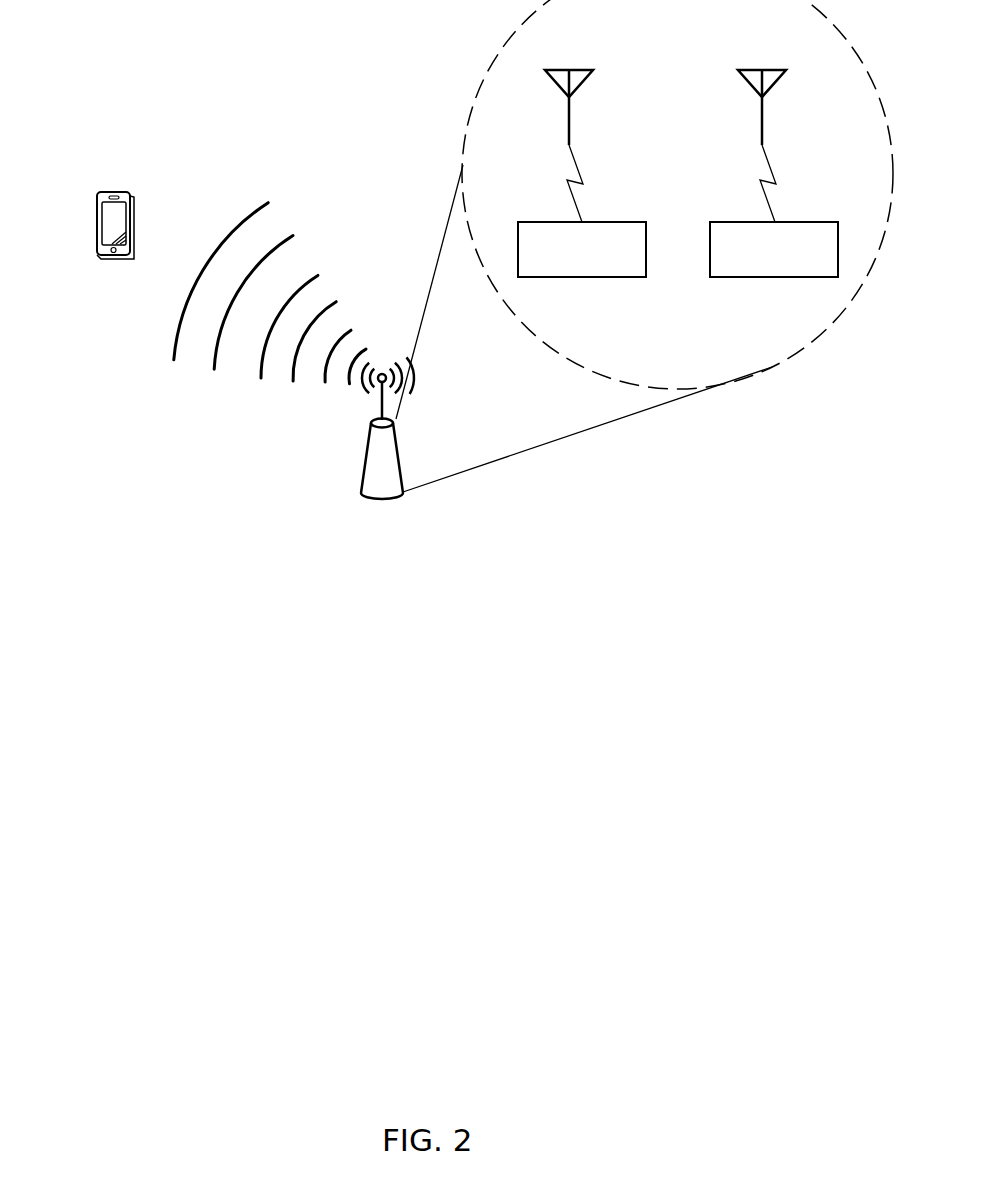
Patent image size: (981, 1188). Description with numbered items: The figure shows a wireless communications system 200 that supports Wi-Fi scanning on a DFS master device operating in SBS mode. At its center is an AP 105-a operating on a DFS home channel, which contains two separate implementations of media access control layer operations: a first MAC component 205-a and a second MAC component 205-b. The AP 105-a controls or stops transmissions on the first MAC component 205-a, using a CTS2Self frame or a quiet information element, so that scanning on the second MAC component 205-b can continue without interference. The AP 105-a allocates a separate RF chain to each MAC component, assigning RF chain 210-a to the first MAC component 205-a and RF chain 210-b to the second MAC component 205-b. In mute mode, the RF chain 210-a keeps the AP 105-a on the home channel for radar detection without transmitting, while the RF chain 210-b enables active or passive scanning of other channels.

The AP 105-a is at (112, 190).
The wireless communications system 200 is at (470, 542).
The MAC component 205-a is at (608, 277).
The MAC component 205-b is at (743, 277).
The RF chain 210-a is at (577, 175).
The RF chain 210-b is at (769, 175).